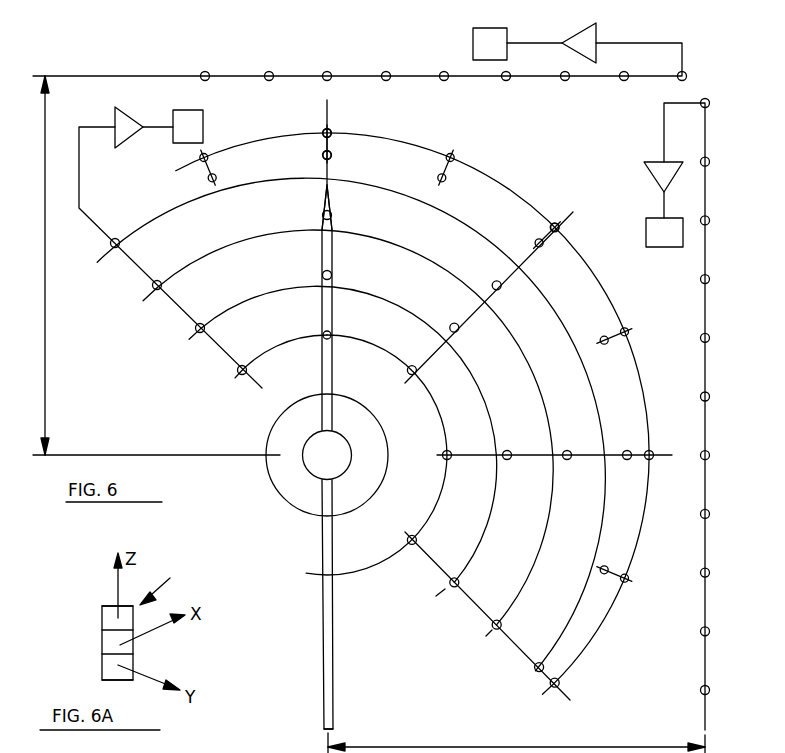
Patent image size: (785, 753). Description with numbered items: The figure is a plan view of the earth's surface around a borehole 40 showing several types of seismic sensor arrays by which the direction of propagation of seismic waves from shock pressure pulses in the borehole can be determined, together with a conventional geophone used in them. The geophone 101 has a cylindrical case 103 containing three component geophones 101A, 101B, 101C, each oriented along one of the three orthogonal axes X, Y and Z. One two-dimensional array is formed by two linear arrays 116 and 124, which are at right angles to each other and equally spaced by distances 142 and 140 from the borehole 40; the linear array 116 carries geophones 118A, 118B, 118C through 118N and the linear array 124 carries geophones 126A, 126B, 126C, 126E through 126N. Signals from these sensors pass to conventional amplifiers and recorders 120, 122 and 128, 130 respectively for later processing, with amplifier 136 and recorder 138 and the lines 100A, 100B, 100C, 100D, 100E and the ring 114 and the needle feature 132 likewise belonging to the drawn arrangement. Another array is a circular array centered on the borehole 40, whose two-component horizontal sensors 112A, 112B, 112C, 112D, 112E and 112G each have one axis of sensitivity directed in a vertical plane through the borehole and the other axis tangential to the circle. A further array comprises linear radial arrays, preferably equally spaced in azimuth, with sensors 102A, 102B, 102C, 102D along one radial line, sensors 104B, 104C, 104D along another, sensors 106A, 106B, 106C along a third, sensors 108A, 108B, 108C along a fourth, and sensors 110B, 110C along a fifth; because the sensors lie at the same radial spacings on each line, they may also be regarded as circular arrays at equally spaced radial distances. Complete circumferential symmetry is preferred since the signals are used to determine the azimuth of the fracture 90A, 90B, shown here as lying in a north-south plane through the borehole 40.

In FIG. 6, the borehole 40 is at (315, 461).
In FIG. 6, the fracture 90A is at (345, 342).
In FIG. 6, the fracture 90B is at (309, 342).
In FIG. 6, the transducer line 100A is at (97, 222).
In FIG. 6, the transducer line 100B is at (329, 108).
In FIG. 6, the transducer line 100C is at (565, 224).
In FIG. 6, the transducer line 100D is at (632, 452).
In FIG. 6, the transducer line 100E is at (520, 652).
In FIG. 6A, the 3-component geophone 101 is at (153, 623).
In FIG. 6A, the component geophone 101A is at (102, 668).
In FIG. 6A, the component geophone 101B is at (102, 643).
In FIG. 6A, the component geophone 101C is at (102, 620).
In FIG. 6, the sensor of radial array 102A is at (237, 372).
In FIG. 6, the sensor of radial array 102B is at (195, 330).
In FIG. 6, the sensor of radial array 102C is at (152, 288).
In FIG. 6, the sensor of radial array 102D is at (110, 246).
In FIG. 6A, the cylindrical case 103 is at (105, 605).
In FIG. 6, the sensor of radial array 104B is at (333, 278).
In FIG. 6, the sensor of radial array 104C is at (331, 215).
In FIG. 6, the sensor of radial array 104D is at (322, 159).
In FIG. 6, the sensor of radial array 106A is at (417, 374).
In FIG. 6, the sensor of radial array 106B is at (459, 331).
In FIG. 6, the sensor of radial array 106C is at (502, 288).
In FIG. 6, the sensor of radial array 108A is at (450, 460).
In FIG. 6, the sensor of radial array 108B is at (507, 460).
In FIG. 6, the sensor of radial array 108C is at (569, 460).
In FIG. 6, the sensor of radial array 110B is at (452, 588).
In FIG. 6, the sensor of radial array 110C is at (502, 624).
In FIG. 6, the 2-component horizontal sensor 112A is at (210, 183).
In FIG. 6, the 2-component horizontal sensor 112B is at (332, 158).
In FIG. 6, the 2-component horizontal sensor 112C is at (443, 183).
In FIG. 6, the 2-component horizontal sensor 112D is at (535, 244).
In FIG. 6, the 2-component horizontal sensor 112E is at (603, 345).
In FIG. 6, the 2-component horizontal sensor 112G is at (604, 566).
In FIG. 6, the outer arc 114 is at (488, 190).
In FIG. 6, the linear array 116 is at (101, 76).
In FIG. 6, the geophone 118A is at (208, 73).
In FIG. 6, the geophone 118B is at (272, 73).
In FIG. 6, the geophone 118C is at (331, 73).
In FIG. 6, the geophone 118N is at (686, 72).
In FIG. 6, the amplifier 120 is at (577, 35).
In FIG. 6, the recorder 122 is at (476, 28).
In FIG. 6, the linear array 124 is at (663, 125).
In FIG. 6, the geophone 126A is at (710, 690).
In FIG. 6, the geophone 126B is at (710, 633).
In FIG. 6, the geophone 126C is at (710, 574).
In FIG. 6, the geophone 126E is at (710, 456).
In FIG. 6, the geophone 126N is at (708, 106).
In FIG. 6, the amplifier 128 is at (646, 170).
In FIG. 6, the recorder 130 is at (325, 280).
In FIG. 6, the needle tip 132 is at (322, 190).
In FIG. 6, the amplifier 136 is at (133, 118).
In FIG. 6, the box 138 is at (204, 123).
In FIG. 6, the spacing 140 is at (496, 745).
In FIG. 6, the spacing 142 is at (45, 423).